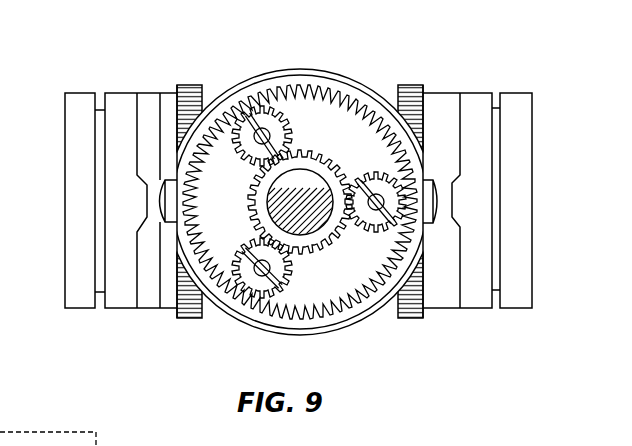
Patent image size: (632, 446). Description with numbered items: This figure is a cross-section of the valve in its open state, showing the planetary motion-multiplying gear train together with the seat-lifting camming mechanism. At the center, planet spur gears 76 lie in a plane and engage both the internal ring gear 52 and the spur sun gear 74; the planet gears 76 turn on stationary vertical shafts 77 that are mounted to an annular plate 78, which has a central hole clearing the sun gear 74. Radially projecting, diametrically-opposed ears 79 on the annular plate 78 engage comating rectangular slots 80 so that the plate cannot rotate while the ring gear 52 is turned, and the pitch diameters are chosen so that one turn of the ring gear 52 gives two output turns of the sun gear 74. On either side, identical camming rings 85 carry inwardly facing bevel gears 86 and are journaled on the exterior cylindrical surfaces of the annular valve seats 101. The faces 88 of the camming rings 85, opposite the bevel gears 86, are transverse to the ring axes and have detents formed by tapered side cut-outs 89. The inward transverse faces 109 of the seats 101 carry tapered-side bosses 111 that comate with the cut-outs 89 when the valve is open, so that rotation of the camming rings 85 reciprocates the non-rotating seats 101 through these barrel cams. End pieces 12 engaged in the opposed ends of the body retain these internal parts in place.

The end piece 12 is at (78, 93).
The internal ring gear 52 is at (210, 290).
The spur sun gear 74 is at (300, 167).
The planet spur gear 76 is at (277, 95).
The stationary vertical shaft 77 is at (305, 85).
The annular plate 78 is at (330, 266).
The ear 79 is at (168, 178).
The rectangular slot 80 is at (427, 226).
The camming ring 85 is at (440, 92).
The bevel gear 86 is at (188, 85).
The face 88 is at (137, 150).
The tapered side cut-out 89 is at (460, 187).
The valve seat 101 is at (122, 295).
The inward transverse face 109 is at (460, 150).
The tapered-side boss 111 is at (138, 233).